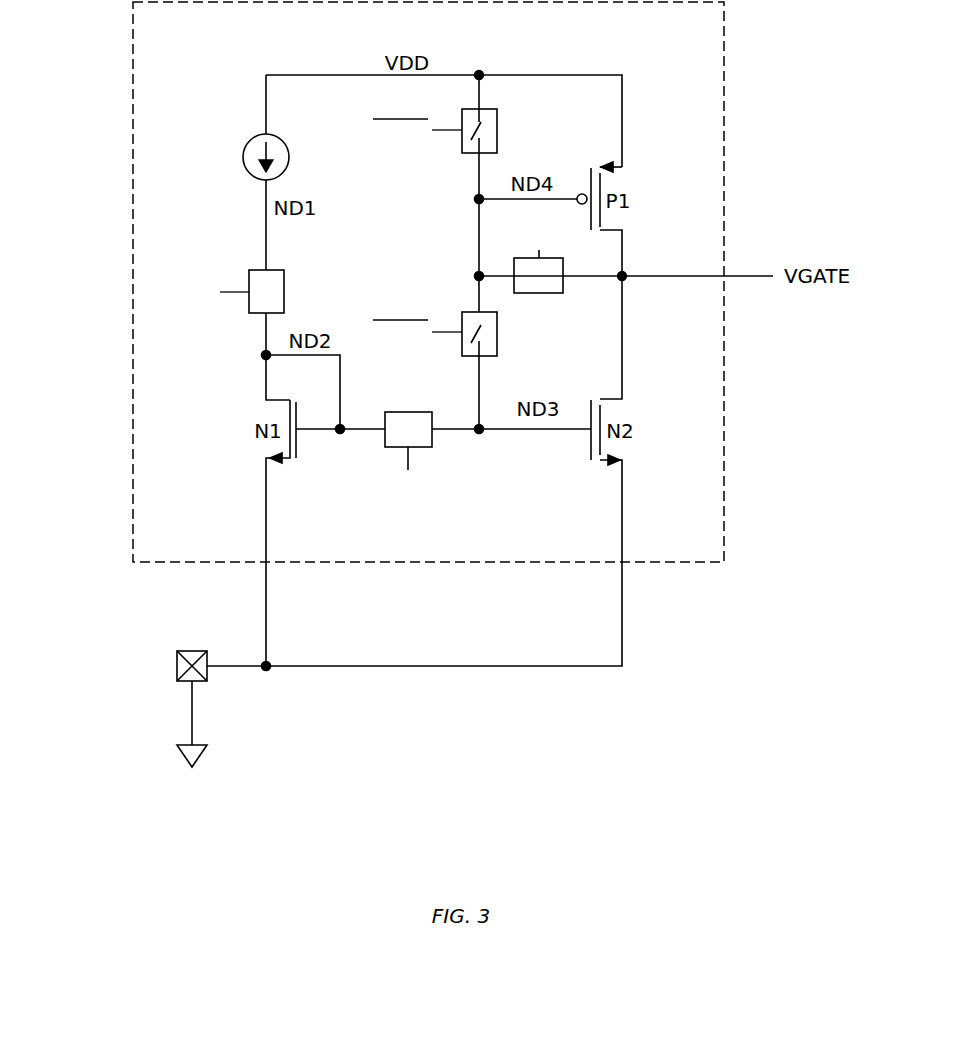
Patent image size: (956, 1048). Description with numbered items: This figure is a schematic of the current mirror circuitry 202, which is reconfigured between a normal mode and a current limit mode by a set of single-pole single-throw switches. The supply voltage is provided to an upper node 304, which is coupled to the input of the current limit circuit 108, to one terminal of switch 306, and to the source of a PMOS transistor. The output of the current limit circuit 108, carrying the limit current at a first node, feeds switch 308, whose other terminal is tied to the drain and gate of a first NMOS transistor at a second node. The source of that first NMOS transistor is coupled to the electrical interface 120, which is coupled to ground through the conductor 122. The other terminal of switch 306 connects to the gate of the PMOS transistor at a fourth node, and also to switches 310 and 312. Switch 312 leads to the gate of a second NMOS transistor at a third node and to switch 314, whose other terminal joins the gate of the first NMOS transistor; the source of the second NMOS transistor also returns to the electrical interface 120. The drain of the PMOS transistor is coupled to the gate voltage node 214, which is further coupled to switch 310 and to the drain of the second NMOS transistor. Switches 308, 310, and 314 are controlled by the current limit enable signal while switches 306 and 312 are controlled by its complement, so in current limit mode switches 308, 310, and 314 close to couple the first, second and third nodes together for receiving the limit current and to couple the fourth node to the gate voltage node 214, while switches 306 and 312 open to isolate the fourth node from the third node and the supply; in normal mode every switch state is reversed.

The current mirror circuitry 202 is at (133, 75).
The current limit circuit 108 is at (252, 140).
The upper node 304 is at (479, 74).
The SPST switch 306 is at (462, 150).
The SPST switch 308 is at (249, 275).
The SPST switch 310 is at (540, 293).
The SPST switch 312 is at (497, 336).
The SPST switch 314 is at (407, 412).
The VGATE node 214 is at (623, 275).
The electrical interface 120 is at (177, 665).
The conductor 122 is at (185, 695).